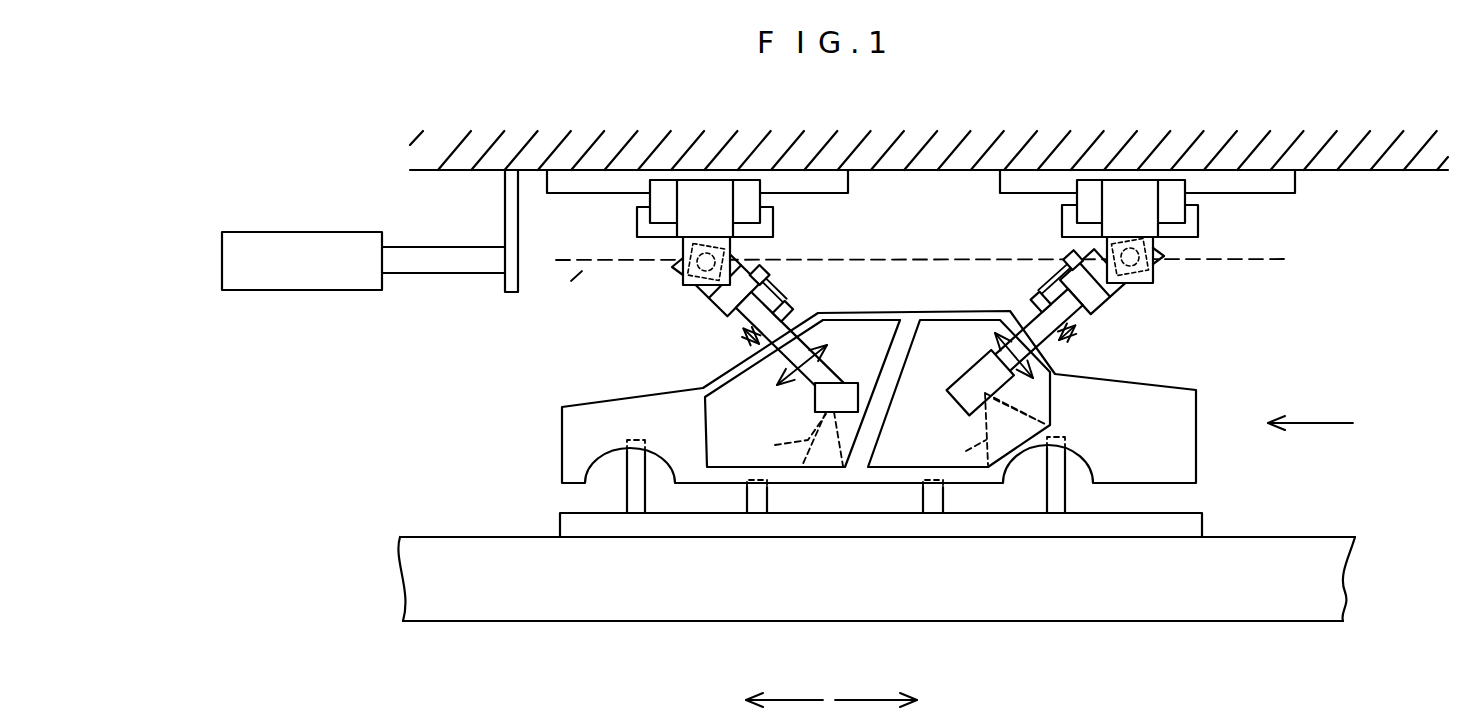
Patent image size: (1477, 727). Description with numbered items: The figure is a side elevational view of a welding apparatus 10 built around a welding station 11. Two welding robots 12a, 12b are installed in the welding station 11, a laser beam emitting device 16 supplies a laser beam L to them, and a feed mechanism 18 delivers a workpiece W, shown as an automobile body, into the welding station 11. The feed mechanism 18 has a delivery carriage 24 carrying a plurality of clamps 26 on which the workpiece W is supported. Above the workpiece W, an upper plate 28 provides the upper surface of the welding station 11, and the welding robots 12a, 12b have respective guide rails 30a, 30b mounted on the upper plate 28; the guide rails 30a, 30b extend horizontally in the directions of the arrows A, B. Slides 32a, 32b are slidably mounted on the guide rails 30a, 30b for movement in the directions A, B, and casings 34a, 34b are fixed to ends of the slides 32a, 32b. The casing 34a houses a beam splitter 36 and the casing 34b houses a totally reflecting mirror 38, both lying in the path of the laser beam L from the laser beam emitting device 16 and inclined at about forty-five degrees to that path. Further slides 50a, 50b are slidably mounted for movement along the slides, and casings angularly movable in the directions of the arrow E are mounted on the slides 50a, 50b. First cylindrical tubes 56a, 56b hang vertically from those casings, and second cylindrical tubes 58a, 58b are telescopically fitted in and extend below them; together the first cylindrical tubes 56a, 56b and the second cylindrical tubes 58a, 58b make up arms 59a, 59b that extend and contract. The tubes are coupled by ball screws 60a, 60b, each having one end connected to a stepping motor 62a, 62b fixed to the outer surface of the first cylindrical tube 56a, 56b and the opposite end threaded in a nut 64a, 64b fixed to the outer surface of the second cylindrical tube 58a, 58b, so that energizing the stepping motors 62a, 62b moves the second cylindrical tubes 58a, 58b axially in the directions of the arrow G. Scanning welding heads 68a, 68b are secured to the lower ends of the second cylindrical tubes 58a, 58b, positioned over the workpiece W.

The welding apparatus 10 is at (835, 234).
The welding station 11 is at (1292, 346).
The welding robot 12a is at (732, 320).
The welding robot 12b is at (1100, 313).
The laser beam emitting device 16 is at (298, 250).
The feed mechanism 18 is at (892, 597).
The delivery carriage 24 is at (602, 528).
The clamps 26 is at (1062, 475).
The upper plate 28 is at (1358, 172).
The guide rail 30a is at (620, 177).
The guide rail 30b is at (1045, 187).
The slide 32a is at (748, 197).
The slide 32b is at (1173, 188).
The casing 34a is at (645, 257).
The casing 34b is at (1153, 268).
The beam splitter 36 is at (677, 247).
The totally reflecting mirror 38 is at (943, 256).
The slide 50a is at (765, 227).
The slide 50b is at (1190, 227).
The first cylindrical tube 56a is at (730, 296).
The first cylindrical tube 56b is at (1105, 296).
The second cylindrical tube 58a is at (728, 312).
The second cylindrical tube 58b is at (1088, 300).
The arm 59a is at (695, 325).
The arm 59b is at (1124, 311).
The ball screw 60a is at (772, 293).
The ball screw 60b is at (1057, 287).
The stepping motor 62a is at (762, 268).
The stepping motor 62b is at (1073, 260).
The nut 64a is at (793, 305).
The nut 64b is at (1028, 297).
The scanning welding head 68a is at (822, 403).
The scanning welding head 68b is at (1050, 395).
The workpiece W is at (575, 427).
The laser beam L is at (800, 366).
The arrow E is at (905, 352).
The arrow G is at (908, 343).
The arrow A is at (784, 684).
The arrow B is at (876, 684).